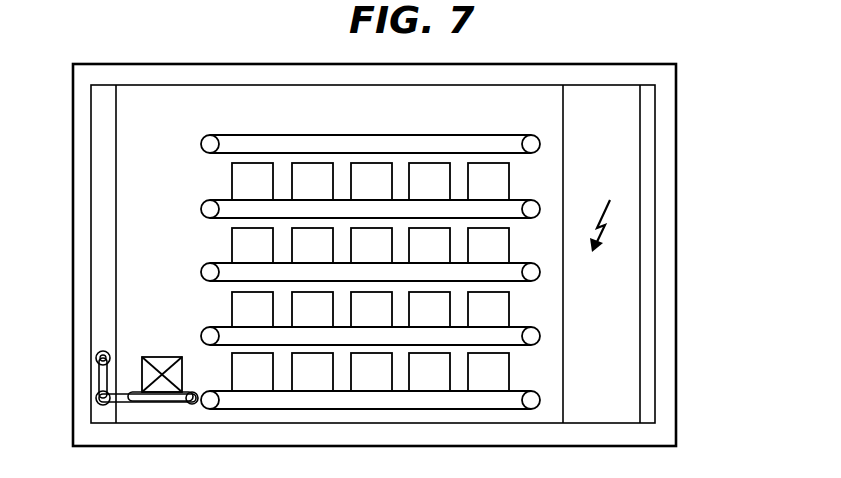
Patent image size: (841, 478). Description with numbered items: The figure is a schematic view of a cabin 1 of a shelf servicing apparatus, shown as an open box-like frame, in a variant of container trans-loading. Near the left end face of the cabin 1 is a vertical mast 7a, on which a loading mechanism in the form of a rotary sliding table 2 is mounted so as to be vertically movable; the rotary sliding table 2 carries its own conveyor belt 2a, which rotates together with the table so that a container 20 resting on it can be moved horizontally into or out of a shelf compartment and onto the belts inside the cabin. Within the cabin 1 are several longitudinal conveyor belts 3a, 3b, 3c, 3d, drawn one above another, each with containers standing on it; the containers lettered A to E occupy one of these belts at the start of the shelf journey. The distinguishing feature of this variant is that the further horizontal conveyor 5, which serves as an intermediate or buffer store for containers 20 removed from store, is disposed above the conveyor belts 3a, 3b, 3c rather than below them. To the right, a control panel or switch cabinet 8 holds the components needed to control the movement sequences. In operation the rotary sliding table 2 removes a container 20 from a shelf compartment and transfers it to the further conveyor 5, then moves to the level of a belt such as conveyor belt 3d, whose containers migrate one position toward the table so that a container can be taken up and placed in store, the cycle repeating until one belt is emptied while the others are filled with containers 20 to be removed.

The cabin 1 is at (688, 362).
The mast 7a is at (100, 142).
The control panel or switch cabinet 8 is at (608, 185).
The further conveyor belt 5 is at (540, 144).
The conveyor belt 3a is at (201, 210).
The conveyor belt 3b is at (201, 273).
The conveyor belt 3c is at (540, 336).
The conveyor belt 3d is at (243, 404).
The rotary sliding table 2 is at (99, 380).
The conveyor belt 2a is at (155, 401).
The container 20 is at (160, 357).